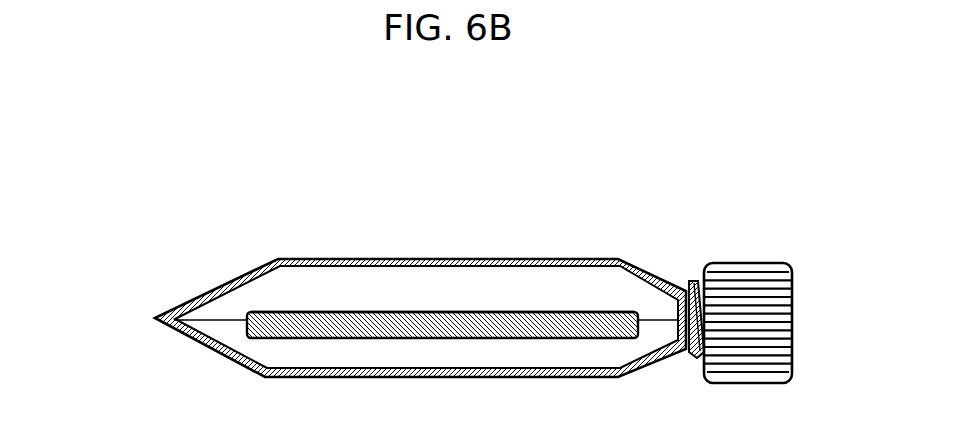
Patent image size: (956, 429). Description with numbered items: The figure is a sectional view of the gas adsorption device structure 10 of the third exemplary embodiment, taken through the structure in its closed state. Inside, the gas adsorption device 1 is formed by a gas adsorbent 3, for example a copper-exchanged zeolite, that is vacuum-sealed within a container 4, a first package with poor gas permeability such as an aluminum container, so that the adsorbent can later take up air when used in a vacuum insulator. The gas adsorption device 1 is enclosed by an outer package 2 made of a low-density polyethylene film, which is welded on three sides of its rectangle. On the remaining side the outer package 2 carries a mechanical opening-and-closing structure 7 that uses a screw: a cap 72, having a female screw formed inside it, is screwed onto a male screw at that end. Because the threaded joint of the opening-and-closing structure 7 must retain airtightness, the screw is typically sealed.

The gas adsorption device structure 10 is at (393, 269).
The gas adsorption device 1 is at (440, 249).
The outer package 2 is at (343, 260).
The gas adsorbent 3 is at (432, 328).
The container 4 is at (530, 312).
The opening-and-closing structure 7 is at (775, 274).
The cap 72 is at (767, 293).